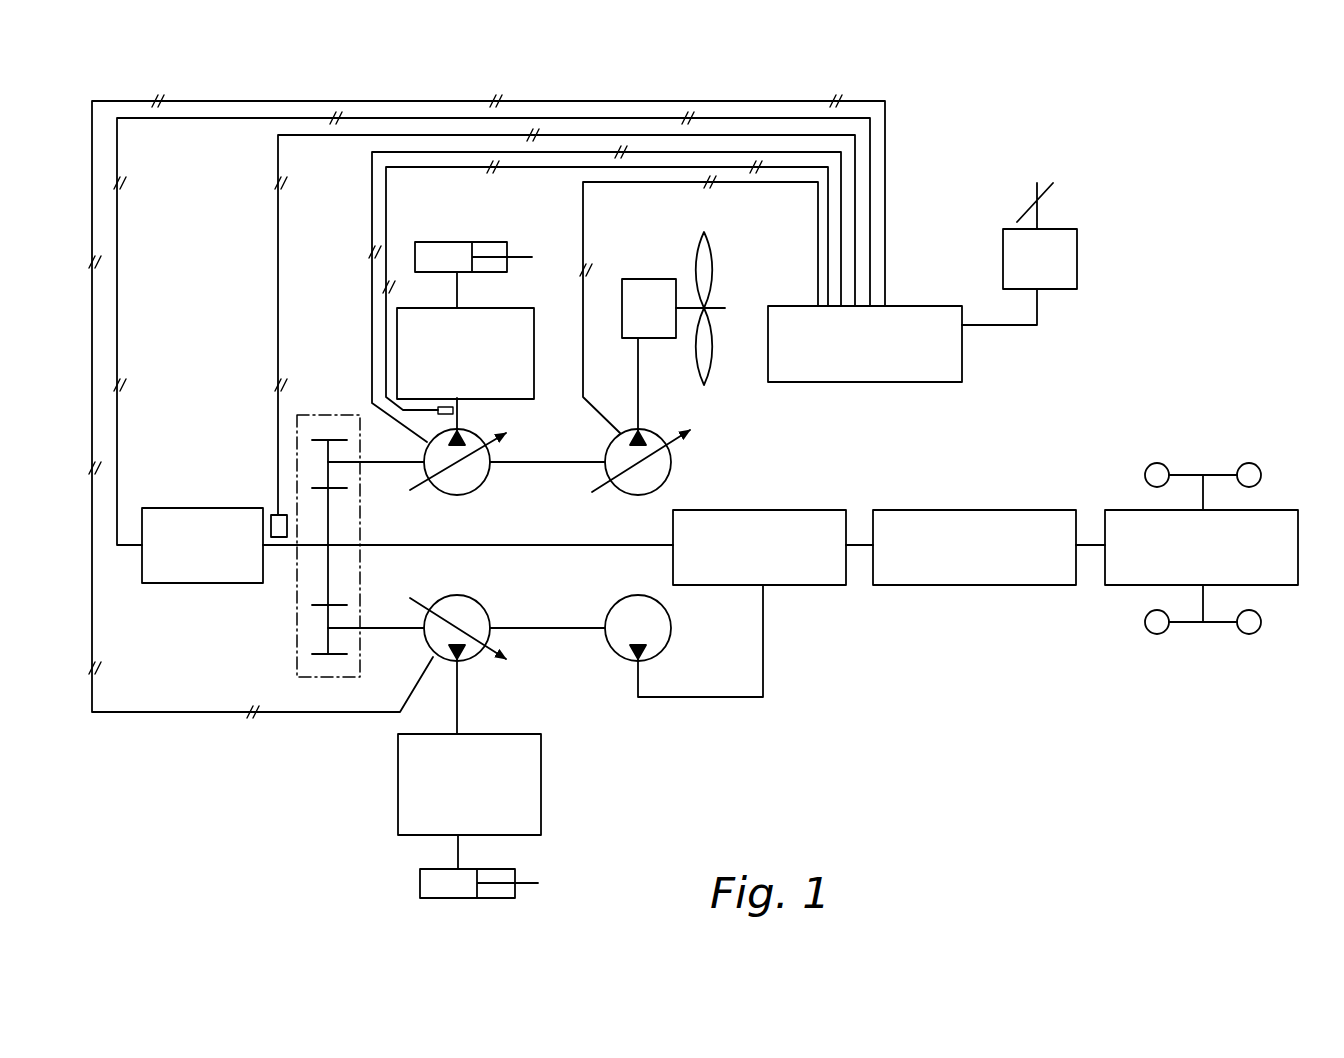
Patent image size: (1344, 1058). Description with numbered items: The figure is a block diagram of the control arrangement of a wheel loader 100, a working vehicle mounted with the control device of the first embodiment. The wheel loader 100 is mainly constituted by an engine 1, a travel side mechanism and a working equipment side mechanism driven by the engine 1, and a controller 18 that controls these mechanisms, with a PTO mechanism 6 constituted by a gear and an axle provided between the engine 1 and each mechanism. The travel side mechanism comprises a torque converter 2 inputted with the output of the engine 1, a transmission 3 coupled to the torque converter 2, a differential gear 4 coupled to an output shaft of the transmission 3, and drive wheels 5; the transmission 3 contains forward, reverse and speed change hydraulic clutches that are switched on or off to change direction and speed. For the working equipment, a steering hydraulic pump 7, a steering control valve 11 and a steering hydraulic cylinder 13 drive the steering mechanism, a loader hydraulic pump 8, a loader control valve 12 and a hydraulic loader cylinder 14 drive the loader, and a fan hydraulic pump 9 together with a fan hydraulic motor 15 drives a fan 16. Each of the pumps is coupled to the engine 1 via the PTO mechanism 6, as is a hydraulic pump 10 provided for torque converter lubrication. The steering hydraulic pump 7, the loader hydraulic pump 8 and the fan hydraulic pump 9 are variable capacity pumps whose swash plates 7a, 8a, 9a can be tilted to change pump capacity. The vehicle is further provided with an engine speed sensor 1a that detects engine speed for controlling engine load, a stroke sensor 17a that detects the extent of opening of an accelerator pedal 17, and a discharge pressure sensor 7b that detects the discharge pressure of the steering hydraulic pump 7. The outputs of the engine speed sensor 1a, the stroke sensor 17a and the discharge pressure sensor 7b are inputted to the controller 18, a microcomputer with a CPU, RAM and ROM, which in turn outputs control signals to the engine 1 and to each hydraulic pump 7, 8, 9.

The wheel loader 100 is at (802, 76).
The engine 1 is at (165, 583).
The engine speed sensor 1a is at (275, 515).
The torque converter 2 is at (792, 585).
The transmission 3 is at (1000, 585).
The differential gear 4 is at (1298, 540).
The drive wheels 5 is at (1261, 475).
The PTO mechanism 6 is at (322, 415).
The steering hydraulic pump 7 is at (443, 495).
The swash plate 7a is at (505, 443).
The discharge pressure sensor 7b is at (454, 410).
The loader hydraulic pump 8 is at (450, 596).
The swash plate 8a is at (489, 662).
The fan hydraulic pump 9 is at (672, 456).
The swash plate 9a is at (672, 428).
The hydraulic pump for torque lubrication 10 is at (613, 658).
The steering control valve 11 is at (506, 308).
The loader control valve 12 is at (398, 777).
The steering hydraulic cylinder 13 is at (437, 242).
The hydraulic loader cylinder 14 is at (420, 885).
The fan hydraulic motor 15 is at (640, 279).
The fan 16 is at (713, 270).
The accelerator pedal 17 is at (1040, 190).
The stroke sensor 17a is at (1077, 245).
The controller 18 is at (906, 382).